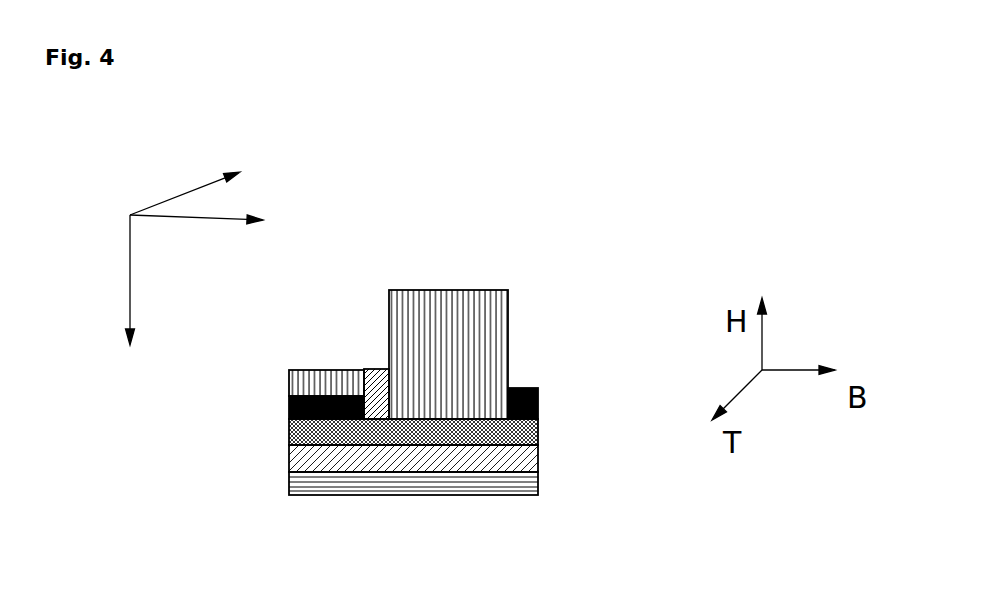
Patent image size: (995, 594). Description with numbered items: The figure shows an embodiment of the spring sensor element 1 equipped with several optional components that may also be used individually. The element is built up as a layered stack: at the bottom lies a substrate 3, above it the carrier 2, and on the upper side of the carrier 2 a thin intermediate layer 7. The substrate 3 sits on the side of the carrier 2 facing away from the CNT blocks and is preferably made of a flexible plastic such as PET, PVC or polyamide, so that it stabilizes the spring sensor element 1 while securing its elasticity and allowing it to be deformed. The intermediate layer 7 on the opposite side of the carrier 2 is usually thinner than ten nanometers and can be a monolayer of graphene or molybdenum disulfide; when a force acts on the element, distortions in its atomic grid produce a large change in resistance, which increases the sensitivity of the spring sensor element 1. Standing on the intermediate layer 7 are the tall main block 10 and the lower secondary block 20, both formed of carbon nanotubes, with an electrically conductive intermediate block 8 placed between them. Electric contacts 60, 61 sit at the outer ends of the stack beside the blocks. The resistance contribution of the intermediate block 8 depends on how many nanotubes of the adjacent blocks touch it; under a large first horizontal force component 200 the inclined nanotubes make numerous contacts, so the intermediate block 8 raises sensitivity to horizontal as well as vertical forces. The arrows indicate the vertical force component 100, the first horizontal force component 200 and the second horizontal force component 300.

The spring sensor element 1 is at (379, 183).
The carrier 2 is at (440, 463).
The substrate 3 is at (372, 480).
The intermediate layer 7 is at (388, 445).
The intermediate block 8 is at (377, 377).
The main block 10 is at (462, 295).
The secondary block 20 is at (341, 369).
The electric contact 60 is at (288, 402).
The electric contact 61 is at (540, 403).
The vertical force component 100 is at (96, 280).
The first horizontal force component 200 is at (202, 250).
The second horizontal force component 300 is at (172, 186).